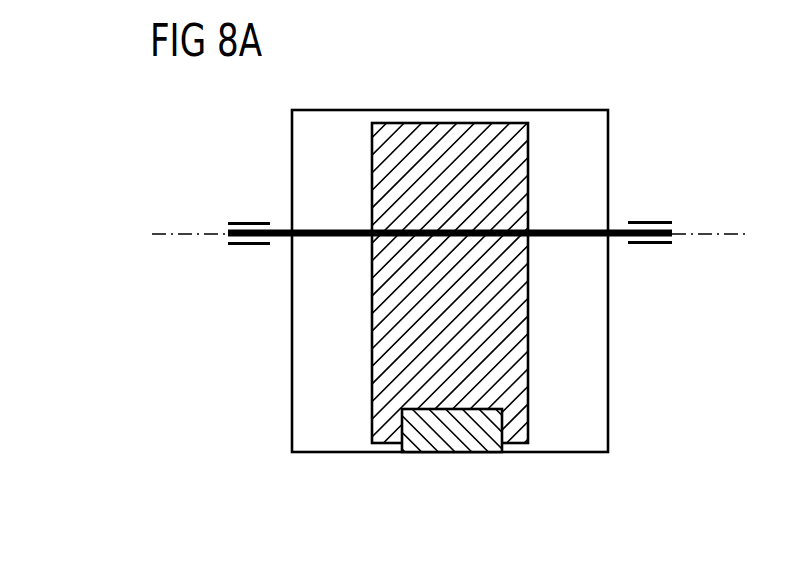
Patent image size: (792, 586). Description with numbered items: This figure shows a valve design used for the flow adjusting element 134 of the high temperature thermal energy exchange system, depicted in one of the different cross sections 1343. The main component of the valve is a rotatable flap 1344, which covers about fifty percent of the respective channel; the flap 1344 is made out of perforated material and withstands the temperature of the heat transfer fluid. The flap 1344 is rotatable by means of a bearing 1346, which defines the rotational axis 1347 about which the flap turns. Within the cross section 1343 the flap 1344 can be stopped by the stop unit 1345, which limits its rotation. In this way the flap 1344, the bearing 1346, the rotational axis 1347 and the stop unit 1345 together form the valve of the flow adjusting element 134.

The flow adjusting element 134 is at (420, 312).
The cross section 1343 is at (262, 312).
The rotatable flap 1344 is at (517, 428).
The stop unit 1345 is at (425, 440).
The bearing 1346 is at (243, 222).
The rotational axis 1347 is at (192, 232).